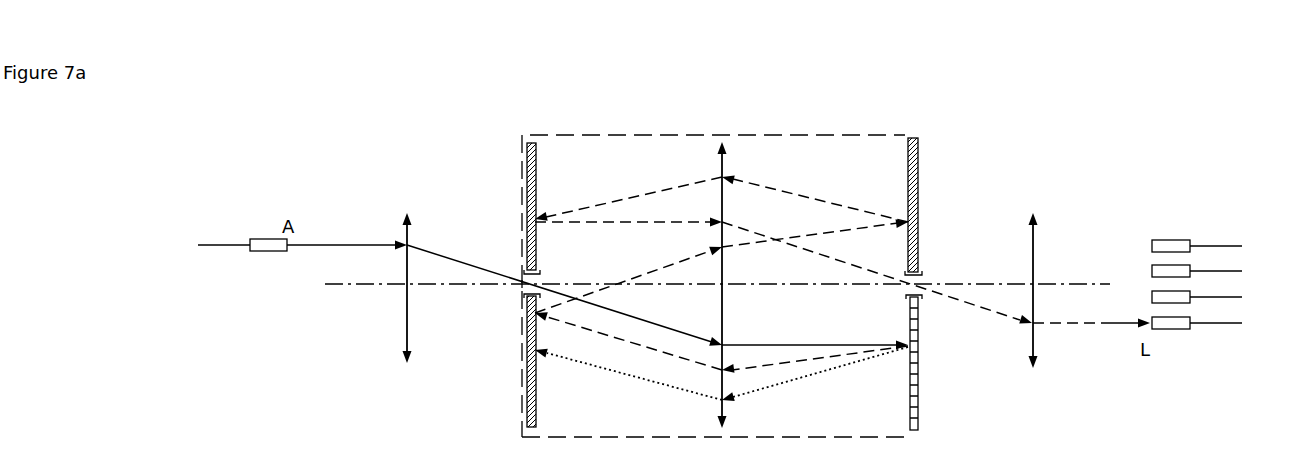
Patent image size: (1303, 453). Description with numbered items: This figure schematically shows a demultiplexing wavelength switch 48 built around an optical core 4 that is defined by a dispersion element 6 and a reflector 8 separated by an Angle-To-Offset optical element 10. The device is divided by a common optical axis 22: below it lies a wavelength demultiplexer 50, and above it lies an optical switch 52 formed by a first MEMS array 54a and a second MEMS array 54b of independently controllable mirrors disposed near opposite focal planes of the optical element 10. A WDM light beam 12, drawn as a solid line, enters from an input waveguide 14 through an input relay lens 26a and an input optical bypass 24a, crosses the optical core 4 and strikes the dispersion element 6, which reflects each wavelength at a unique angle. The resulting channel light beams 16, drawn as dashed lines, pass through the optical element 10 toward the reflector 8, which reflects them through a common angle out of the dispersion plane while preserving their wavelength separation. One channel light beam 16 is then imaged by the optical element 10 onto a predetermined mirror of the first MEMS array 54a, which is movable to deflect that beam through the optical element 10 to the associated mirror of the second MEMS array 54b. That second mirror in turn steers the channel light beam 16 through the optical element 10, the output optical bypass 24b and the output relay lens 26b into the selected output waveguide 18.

The optical core 4 is at (576, 134).
The dispersion element 6 is at (921, 392).
The reflector 8 is at (524, 412).
The optical element 10 is at (720, 173).
The WDM light beam 12 is at (358, 245).
The input waveguide 14 is at (216, 244).
The channel light beam 16 is at (778, 366).
The output waveguide 18 is at (1232, 323).
The optical axis 22 is at (344, 285).
The input optical bypass 24a is at (522, 293).
The output optical bypass 24b is at (924, 277).
The input relay lens 26a is at (406, 318).
The output relay lens 26b is at (1035, 258).
The demultiplexing wavelength switch 48 is at (964, 113).
The wavelength demultiplexer 50 is at (605, 410).
The optical switch 52 is at (600, 177).
The first MEMS array 54a is at (921, 177).
The second MEMS array 54b is at (528, 172).